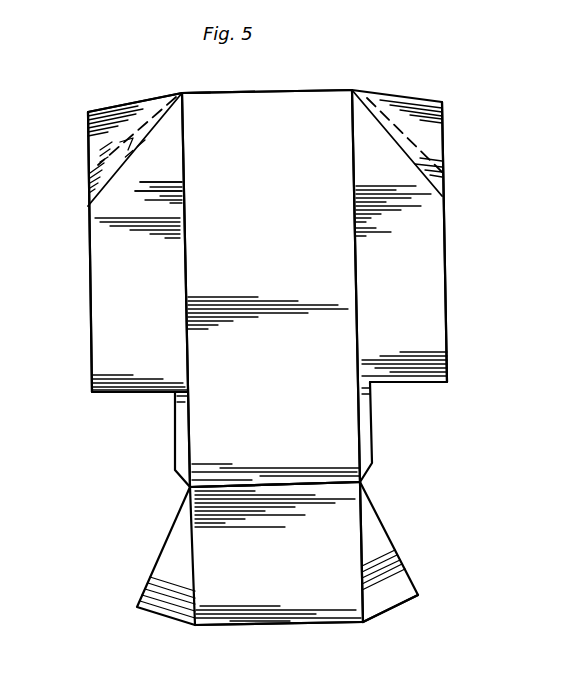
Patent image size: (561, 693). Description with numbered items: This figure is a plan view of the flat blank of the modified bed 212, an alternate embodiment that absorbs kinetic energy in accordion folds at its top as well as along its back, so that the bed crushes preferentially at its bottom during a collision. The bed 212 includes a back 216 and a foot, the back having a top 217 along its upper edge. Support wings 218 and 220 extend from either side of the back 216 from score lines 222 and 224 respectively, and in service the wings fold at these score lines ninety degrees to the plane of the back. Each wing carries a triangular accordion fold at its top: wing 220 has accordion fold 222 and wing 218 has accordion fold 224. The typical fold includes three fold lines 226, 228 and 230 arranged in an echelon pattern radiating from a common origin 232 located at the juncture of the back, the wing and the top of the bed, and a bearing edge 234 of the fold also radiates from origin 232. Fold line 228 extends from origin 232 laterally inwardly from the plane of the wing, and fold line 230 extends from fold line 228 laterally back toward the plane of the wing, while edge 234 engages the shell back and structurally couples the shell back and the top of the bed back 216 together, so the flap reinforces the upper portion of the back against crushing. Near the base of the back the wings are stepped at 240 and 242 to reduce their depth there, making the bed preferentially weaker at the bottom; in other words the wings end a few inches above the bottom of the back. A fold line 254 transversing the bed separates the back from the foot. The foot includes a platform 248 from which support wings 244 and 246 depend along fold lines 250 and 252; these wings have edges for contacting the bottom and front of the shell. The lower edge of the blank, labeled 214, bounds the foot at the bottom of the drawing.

The modified bed 212 is at (457, 275).
The bottom edge of blank 214 is at (407, 597).
The back 216 is at (335, 226).
The top 217 is at (268, 90).
The support wing 218 is at (448, 371).
The support wing 220 is at (125, 335).
The score line / accordion fold 222 is at (90, 141).
The score line / accordion fold 224 is at (190, 345).
The fold line 226 is at (90, 195).
The fold line 228 is at (122, 165).
The fold line 230 is at (130, 145).
The common origin 232 is at (183, 94).
The bearing edge 234 is at (137, 102).
The step 240 is at (372, 452).
The step 242 is at (173, 442).
The support wing 244 is at (390, 537).
The support wing 246 is at (180, 555).
The foot / platform 248 is at (338, 618).
The fold line 250 is at (360, 545).
The fold line 252 is at (196, 550).
The fold line 254 is at (250, 482).